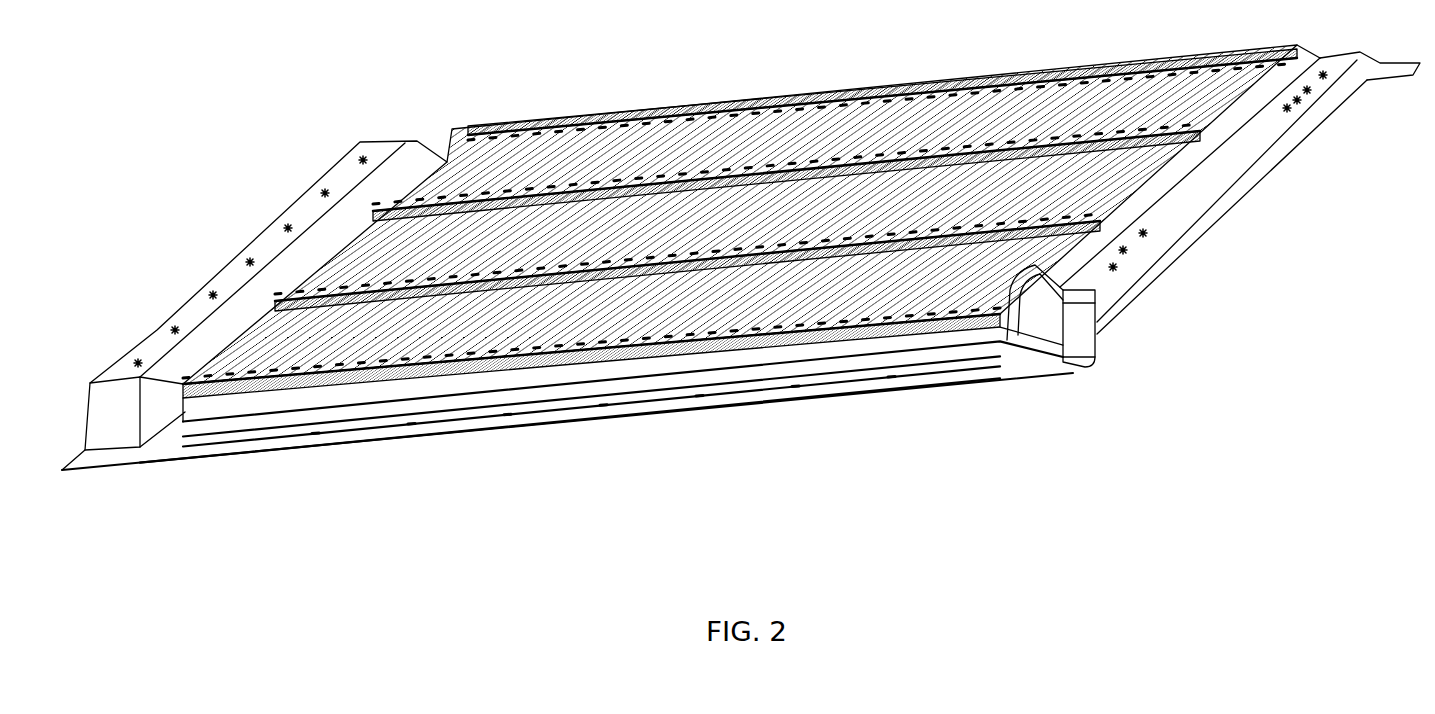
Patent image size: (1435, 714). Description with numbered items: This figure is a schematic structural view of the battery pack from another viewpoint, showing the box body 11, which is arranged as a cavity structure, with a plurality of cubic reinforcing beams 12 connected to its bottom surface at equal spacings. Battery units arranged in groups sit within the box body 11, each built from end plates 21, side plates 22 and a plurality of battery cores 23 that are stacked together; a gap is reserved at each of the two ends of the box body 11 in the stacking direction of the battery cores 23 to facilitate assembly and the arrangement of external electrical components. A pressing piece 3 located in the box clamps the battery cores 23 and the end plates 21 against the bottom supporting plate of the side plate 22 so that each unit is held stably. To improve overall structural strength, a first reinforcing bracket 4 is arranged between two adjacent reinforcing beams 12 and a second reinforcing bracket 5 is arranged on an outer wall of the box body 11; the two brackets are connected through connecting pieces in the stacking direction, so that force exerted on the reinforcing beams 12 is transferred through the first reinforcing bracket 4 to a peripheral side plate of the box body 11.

The pressing piece 3 is at (597, 365).
The first reinforcing bracket 4 is at (1080, 265).
The second reinforcing bracket 5 is at (1130, 300).
The box body 11 is at (1208, 178).
The reinforcing beam 12 is at (403, 413).
The end plate 21 is at (1152, 200).
The side plate 22 is at (493, 397).
The battery core 23 is at (773, 393).